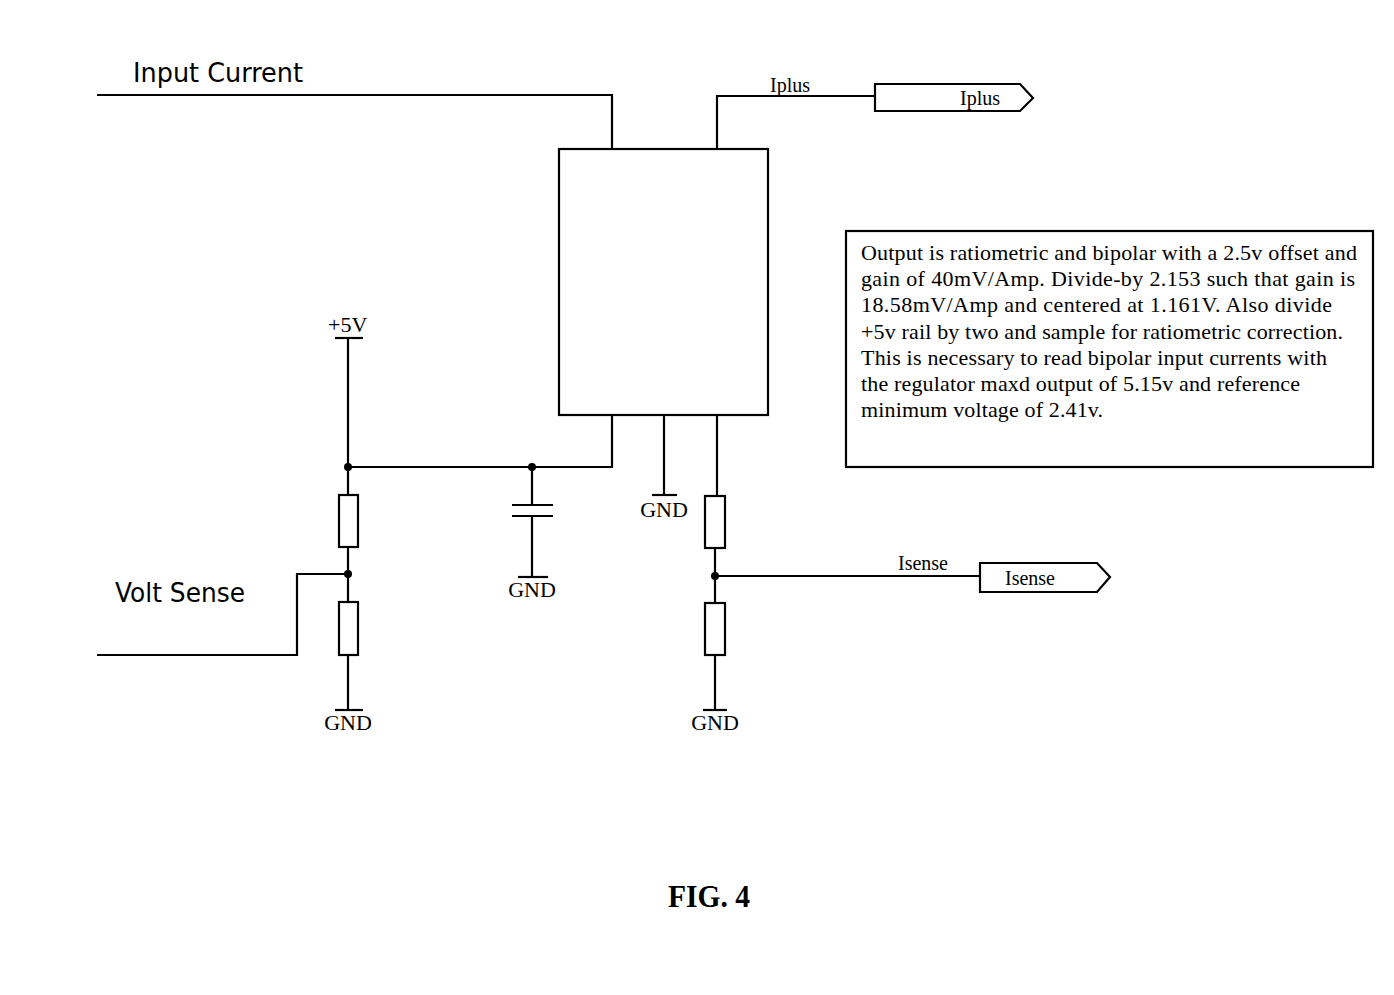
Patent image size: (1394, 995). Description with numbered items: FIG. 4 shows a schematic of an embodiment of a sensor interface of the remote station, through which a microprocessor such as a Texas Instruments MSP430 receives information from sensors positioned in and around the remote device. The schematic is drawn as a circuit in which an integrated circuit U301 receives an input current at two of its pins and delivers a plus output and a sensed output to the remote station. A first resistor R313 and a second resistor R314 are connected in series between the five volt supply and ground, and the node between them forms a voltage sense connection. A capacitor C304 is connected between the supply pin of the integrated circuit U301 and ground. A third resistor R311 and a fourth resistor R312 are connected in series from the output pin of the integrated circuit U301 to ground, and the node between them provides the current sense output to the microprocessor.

The current sensor IC ACS754LCB-050-PFF U301 is at (769, 284).
The resistor 2.87k R313 is at (407, 534).
The resistor 2.49k R314 is at (407, 641).
The capacitor 0.1uF C304 is at (578, 535).
The resistor 2.87k R311 is at (773, 535).
The resistor 2.49k R312 is at (773, 642).